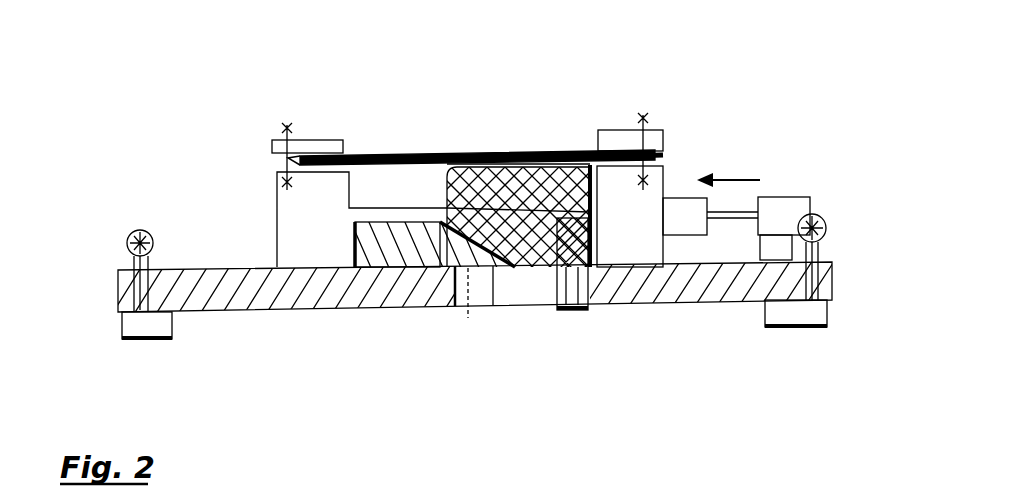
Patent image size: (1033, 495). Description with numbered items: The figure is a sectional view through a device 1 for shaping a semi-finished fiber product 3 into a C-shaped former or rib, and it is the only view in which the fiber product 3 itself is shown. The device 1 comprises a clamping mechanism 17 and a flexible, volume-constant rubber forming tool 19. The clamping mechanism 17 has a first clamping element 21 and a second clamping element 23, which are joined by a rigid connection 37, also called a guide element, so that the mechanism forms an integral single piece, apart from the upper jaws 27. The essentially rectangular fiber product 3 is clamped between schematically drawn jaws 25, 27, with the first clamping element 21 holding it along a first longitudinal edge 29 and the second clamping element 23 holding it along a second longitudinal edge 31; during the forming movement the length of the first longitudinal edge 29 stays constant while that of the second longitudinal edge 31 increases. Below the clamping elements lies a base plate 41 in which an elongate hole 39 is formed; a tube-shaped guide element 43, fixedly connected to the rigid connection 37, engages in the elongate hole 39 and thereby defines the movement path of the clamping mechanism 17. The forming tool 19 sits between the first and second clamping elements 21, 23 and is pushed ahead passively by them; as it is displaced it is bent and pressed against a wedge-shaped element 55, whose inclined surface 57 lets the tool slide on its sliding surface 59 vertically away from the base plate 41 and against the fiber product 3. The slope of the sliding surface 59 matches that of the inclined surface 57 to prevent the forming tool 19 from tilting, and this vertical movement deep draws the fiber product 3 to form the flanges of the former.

The device 1 is at (206, 48).
The semi-finished fiber product 3 is at (400, 210).
The clamping mechanism 17 is at (195, 150).
The forming tool 19 is at (527, 268).
The first clamping element 21 is at (662, 182).
The second clamping element 23 is at (277, 190).
The jaw 25 is at (318, 140).
The upper jaw 27 is at (338, 150).
The first longitudinal edge 29 is at (668, 160).
The second longitudinal edge 31 is at (306, 158).
The rigid connection 37 is at (416, 165).
The elongate hole 39 is at (492, 300).
The base plate 41 is at (265, 303).
The guide element 43 is at (590, 305).
The wedge-shaped element 55 is at (395, 266).
The inclined surface 57 is at (453, 286).
The sliding surface 59 is at (537, 152).